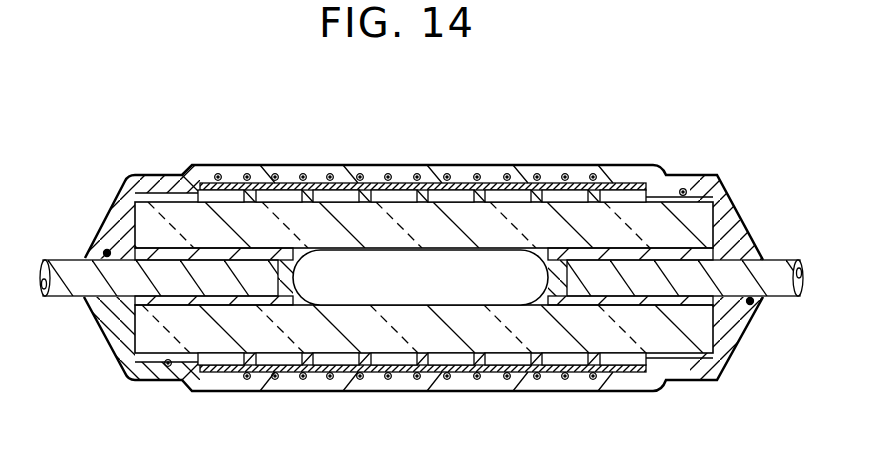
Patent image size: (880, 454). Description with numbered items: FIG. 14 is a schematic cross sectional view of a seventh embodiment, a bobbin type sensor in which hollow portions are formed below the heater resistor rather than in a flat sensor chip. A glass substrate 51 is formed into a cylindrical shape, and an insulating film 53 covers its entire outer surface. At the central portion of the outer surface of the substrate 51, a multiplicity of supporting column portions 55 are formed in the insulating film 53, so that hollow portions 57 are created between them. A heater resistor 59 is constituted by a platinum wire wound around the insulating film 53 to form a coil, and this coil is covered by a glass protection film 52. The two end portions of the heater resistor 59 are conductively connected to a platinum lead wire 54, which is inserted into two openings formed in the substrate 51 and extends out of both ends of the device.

The glass substrate 51 is at (452, 212).
The glass protection film 52 is at (644, 166).
The insulating film 53 is at (537, 186).
The platinum lead wire 54 is at (69, 261).
The supporting column portions 55 is at (487, 184).
The hollow portions 57 is at (284, 196).
The heater resistor 59 is at (218, 173).